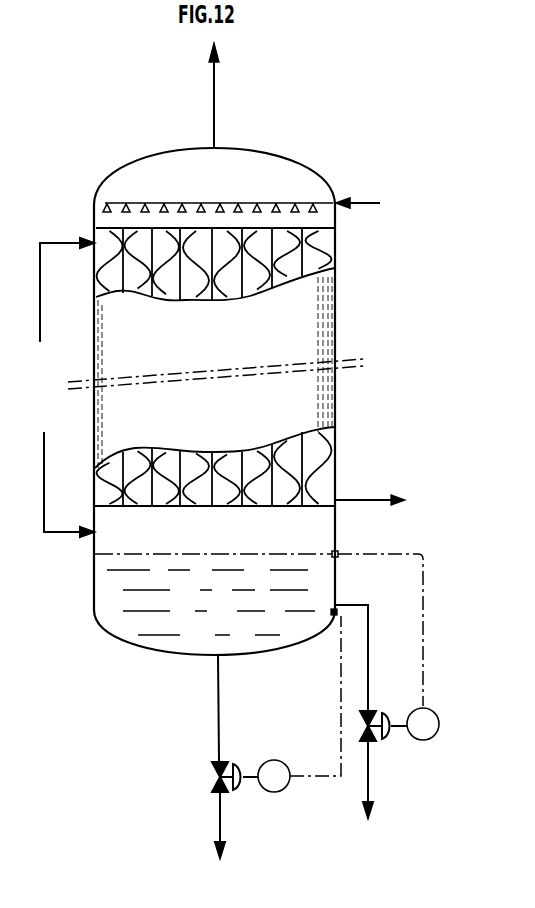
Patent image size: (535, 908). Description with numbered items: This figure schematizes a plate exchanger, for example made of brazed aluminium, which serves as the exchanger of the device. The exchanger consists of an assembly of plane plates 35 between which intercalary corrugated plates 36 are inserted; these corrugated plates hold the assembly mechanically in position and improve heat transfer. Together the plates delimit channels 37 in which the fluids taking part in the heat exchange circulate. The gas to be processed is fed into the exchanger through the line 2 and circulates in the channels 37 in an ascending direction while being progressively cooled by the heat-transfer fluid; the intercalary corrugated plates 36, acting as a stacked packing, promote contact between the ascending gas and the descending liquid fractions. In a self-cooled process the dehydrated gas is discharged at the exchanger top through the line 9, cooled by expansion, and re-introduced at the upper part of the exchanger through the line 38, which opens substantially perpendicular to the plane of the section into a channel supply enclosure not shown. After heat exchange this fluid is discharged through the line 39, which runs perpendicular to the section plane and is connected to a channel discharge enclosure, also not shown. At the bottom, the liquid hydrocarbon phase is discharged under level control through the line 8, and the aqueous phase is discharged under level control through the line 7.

The line 2 is at (44, 432).
The line 7 is at (219, 715).
The line 8 is at (369, 648).
The line 9 is at (215, 90).
The plane plates 35 is at (328, 232).
The intercalary corrugated plates 36 is at (305, 258).
The channels 37 is at (310, 280).
The line 38 is at (40, 342).
The line 39 is at (363, 500).